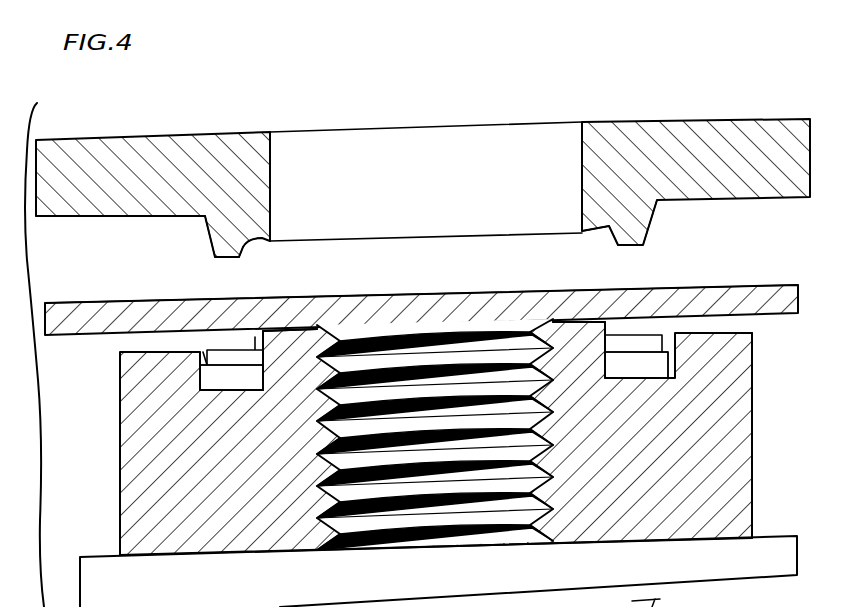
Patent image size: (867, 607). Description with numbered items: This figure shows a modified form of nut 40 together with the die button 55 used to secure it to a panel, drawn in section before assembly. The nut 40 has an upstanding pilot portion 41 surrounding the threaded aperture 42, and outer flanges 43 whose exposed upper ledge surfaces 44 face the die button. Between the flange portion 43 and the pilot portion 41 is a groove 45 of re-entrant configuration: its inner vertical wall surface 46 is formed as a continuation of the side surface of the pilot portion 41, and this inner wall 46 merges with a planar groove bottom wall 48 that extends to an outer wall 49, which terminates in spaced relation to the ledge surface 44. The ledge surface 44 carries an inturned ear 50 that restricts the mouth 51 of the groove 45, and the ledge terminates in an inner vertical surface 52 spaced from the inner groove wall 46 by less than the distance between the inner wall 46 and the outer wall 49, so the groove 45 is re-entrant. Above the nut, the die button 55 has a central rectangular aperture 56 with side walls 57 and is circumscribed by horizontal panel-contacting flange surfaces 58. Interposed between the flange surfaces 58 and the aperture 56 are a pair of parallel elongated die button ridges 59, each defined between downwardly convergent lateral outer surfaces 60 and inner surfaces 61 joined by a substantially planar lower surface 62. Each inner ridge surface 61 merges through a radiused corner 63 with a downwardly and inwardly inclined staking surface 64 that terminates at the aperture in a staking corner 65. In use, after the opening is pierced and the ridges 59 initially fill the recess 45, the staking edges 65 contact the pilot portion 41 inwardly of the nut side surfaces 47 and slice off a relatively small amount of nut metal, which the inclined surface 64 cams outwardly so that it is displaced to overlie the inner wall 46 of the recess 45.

The nut 40 is at (753, 383).
The pilot portion 41 is at (581, 325).
The threaded aperture 42 is at (537, 348).
The outer flange 43 is at (752, 486).
The ledge surface 44 is at (730, 325).
The groove 45 is at (201, 392).
The inner vertical wall surface 46 is at (240, 390).
The nut side surfaces 47 is at (294, 302).
The groove bottom wall 48 is at (245, 370).
The outer wall 49 is at (200, 388).
The inturned ear 50 is at (202, 360).
The mouth 51 is at (240, 348).
The inner vertical surface 52 is at (212, 350).
The die button 55 is at (203, 132).
The central rectangular aperture 56 is at (404, 136).
The side walls 57 is at (272, 150).
The panel-contacting flange surfaces 58 is at (89, 200).
The die button ridges 59 is at (237, 256).
The lateral outer surfaces 60 is at (205, 231).
The inner surfaces 61 is at (278, 242).
The lower surface 62 is at (214, 258).
The radiused corner 63 is at (245, 253).
The staking surface 64 is at (630, 253).
The staking corner 65 is at (584, 229).